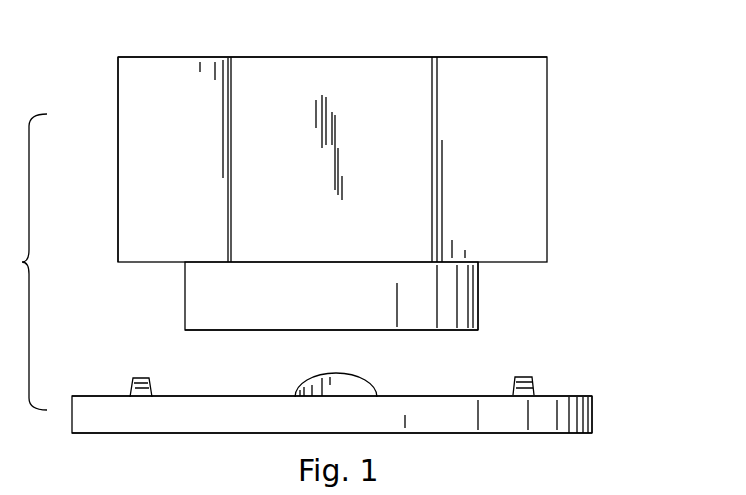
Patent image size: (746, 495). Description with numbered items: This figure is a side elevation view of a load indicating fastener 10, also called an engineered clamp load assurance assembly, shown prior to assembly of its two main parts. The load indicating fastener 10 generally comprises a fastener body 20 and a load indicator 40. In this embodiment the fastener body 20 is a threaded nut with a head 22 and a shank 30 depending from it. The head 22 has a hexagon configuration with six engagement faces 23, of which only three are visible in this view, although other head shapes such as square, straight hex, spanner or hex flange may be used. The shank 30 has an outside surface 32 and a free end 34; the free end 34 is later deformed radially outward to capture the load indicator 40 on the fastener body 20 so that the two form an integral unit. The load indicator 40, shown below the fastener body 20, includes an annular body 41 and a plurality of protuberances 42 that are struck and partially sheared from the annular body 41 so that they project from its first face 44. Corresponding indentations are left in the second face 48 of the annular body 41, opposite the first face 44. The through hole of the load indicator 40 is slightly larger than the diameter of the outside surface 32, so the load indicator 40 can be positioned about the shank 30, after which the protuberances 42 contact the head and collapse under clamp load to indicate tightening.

The load indicating fastener 10 is at (626, 176).
The fastener body 20 is at (552, 128).
The head 22 is at (118, 113).
The engagement faces 23 is at (178, 57).
The shank 30 is at (181, 278).
The outside surface 32 is at (478, 292).
The free end 34 is at (445, 330).
The load indicator 40 is at (598, 418).
The annular body 41 is at (577, 432).
The protuberances 42 is at (138, 378).
The first face 44 is at (565, 395).
The second face 48 is at (555, 433).